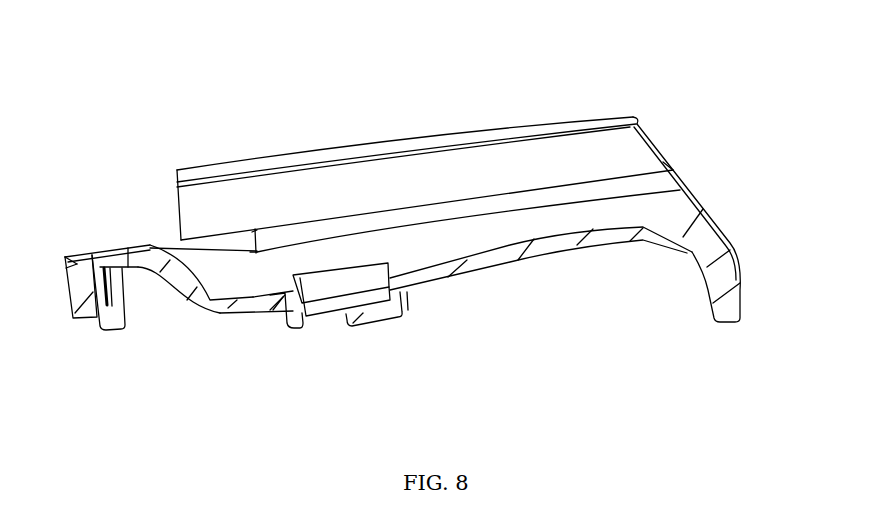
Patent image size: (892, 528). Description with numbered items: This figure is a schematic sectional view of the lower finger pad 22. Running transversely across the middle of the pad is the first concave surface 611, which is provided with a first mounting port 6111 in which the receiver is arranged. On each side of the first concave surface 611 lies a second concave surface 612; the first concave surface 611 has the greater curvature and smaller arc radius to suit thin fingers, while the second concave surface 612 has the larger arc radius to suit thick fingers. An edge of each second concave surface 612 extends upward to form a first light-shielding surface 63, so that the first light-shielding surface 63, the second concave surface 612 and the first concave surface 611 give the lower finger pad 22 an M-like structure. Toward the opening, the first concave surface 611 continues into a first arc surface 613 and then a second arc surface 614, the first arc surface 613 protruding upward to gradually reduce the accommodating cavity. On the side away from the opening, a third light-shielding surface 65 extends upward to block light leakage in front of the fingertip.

The lower finger pad 22 is at (383, 107).
The first light-shielding surface 63 is at (448, 168).
The second concave surface 612 is at (328, 228).
The first arc surface 613 is at (571, 233).
The second arc surface 614 is at (700, 210).
The first concave surface 611 is at (397, 265).
The first mounting port 6111 is at (352, 283).
The third light-shielding surface 65 is at (205, 267).